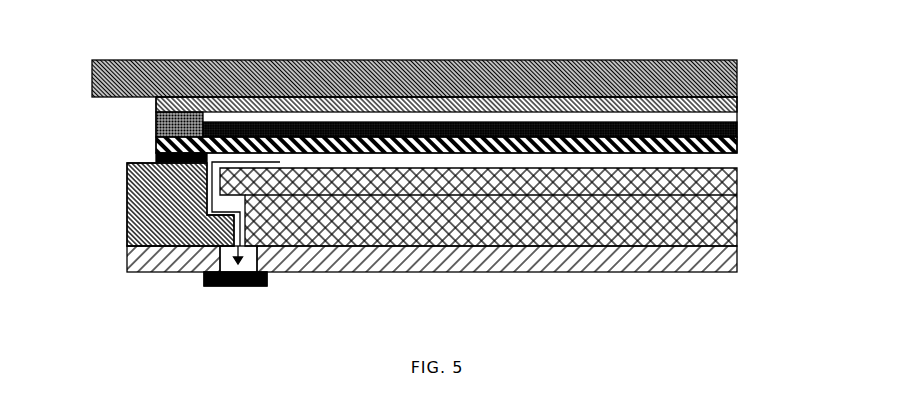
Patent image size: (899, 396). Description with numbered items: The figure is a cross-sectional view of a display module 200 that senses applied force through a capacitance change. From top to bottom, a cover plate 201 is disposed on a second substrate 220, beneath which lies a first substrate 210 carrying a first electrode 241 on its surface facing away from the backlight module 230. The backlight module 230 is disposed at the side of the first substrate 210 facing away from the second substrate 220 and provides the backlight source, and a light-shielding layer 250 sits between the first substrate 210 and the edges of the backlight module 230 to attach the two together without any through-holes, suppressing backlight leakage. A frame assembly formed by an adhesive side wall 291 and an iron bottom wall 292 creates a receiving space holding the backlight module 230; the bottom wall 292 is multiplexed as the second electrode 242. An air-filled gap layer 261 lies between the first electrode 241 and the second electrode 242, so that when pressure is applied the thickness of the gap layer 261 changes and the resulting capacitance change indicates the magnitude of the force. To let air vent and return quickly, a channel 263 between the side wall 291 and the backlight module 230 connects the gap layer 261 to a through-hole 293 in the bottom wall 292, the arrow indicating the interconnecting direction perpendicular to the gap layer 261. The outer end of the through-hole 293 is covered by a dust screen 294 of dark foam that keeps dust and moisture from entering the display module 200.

The display module 200 is at (711, 48).
The cover plate 201 is at (115, 60).
The first substrate 210 is at (156, 140).
The second substrate 220 is at (738, 96).
The first electrode 241 is at (738, 133).
The gap layer 261 is at (725, 157).
The light-shielding layer 250 is at (156, 160).
The channel 263 is at (127, 196).
The side wall 291 is at (127, 229).
The backlight module 230 is at (730, 222).
The second electrode 242 is at (432, 277).
The bottom wall 292 is at (583, 273).
The through-hole 293 is at (247, 287).
The dust screen 294 is at (213, 287).